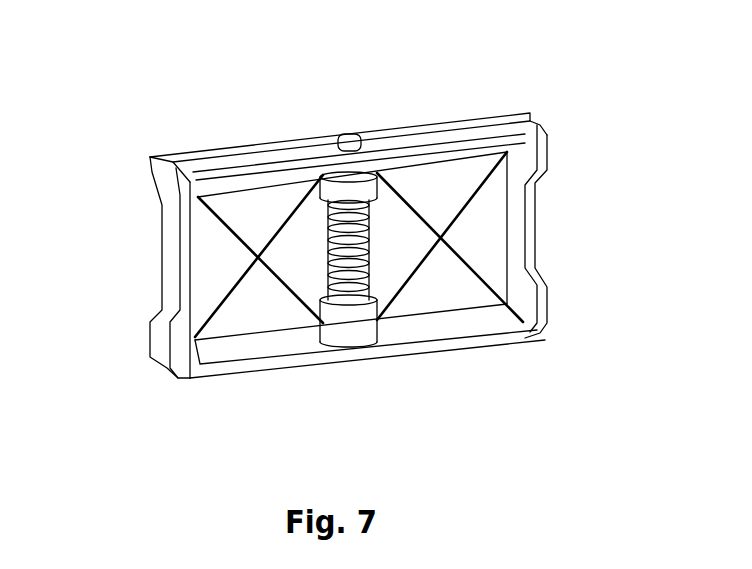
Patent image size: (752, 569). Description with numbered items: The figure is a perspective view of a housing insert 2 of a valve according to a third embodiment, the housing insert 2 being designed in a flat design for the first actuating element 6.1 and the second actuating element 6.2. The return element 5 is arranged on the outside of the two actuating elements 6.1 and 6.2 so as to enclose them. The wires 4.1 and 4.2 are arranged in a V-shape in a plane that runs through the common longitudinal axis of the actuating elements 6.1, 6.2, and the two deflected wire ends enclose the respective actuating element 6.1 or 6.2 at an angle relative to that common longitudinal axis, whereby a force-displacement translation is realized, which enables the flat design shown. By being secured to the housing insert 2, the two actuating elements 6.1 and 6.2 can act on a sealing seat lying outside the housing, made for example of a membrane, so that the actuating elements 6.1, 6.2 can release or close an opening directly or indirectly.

The housing insert 2 is at (153, 180).
The wire 4.1 is at (238, 235).
The wire 4.2 is at (220, 306).
The return element 5 is at (372, 262).
The first actuating element 6.1 is at (352, 183).
The second actuating element 6.2 is at (380, 352).